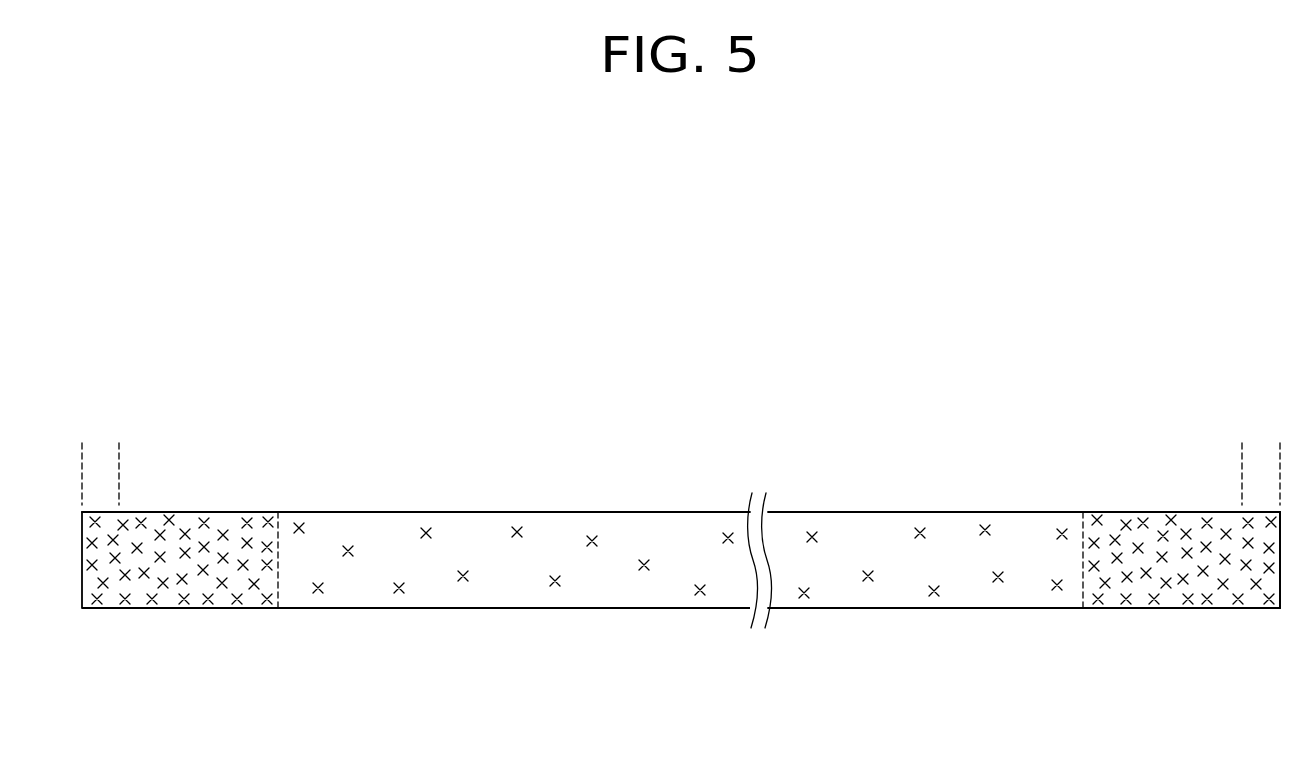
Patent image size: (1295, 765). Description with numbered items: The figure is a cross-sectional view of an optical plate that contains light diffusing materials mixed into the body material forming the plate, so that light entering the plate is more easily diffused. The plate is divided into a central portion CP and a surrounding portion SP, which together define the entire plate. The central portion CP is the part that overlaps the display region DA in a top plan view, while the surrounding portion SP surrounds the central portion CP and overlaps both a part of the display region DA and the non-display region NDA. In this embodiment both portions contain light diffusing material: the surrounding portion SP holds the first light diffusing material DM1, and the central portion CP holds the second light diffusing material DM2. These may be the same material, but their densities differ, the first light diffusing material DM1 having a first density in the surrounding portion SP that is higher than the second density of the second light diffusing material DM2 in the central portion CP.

The display region DA is at (1242, 438).
The non-display region NDA is at (1280, 438).
The central portion CP is at (1025, 591).
The second light diffusing material DM2 is at (866, 581).
The surrounding portion SP is at (1170, 597).
The first light diffusing material DM1 is at (1222, 586).